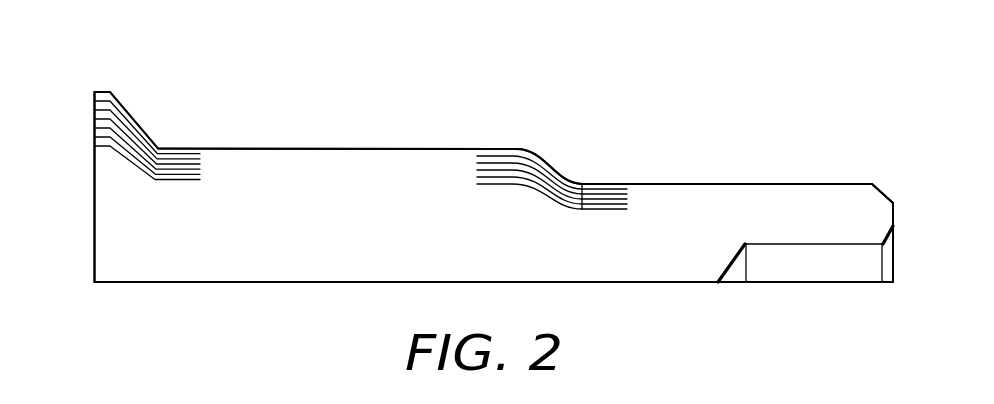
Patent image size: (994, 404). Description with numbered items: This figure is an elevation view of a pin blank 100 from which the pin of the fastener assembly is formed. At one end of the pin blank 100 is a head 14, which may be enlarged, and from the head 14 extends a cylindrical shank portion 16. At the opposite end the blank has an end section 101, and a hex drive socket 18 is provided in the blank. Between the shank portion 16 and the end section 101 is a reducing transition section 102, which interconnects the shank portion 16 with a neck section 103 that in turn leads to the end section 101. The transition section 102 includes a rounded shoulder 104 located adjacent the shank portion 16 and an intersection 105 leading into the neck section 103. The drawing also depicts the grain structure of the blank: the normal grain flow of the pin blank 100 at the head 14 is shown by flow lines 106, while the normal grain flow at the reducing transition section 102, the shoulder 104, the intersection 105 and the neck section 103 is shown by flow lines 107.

The pin blank 100 is at (472, 98).
The head 14 is at (94, 169).
The cylindrical shank portion 16 is at (305, 149).
The flow lines 106 is at (133, 135).
The rounded shoulder 104 is at (555, 149).
The flow lines 107 is at (492, 174).
The reducing transition section 102 is at (580, 149).
The neck section 103 is at (593, 183).
The intersection 105 is at (580, 183).
The end section 101 is at (803, 184).
The hex drive socket 18 is at (812, 244).